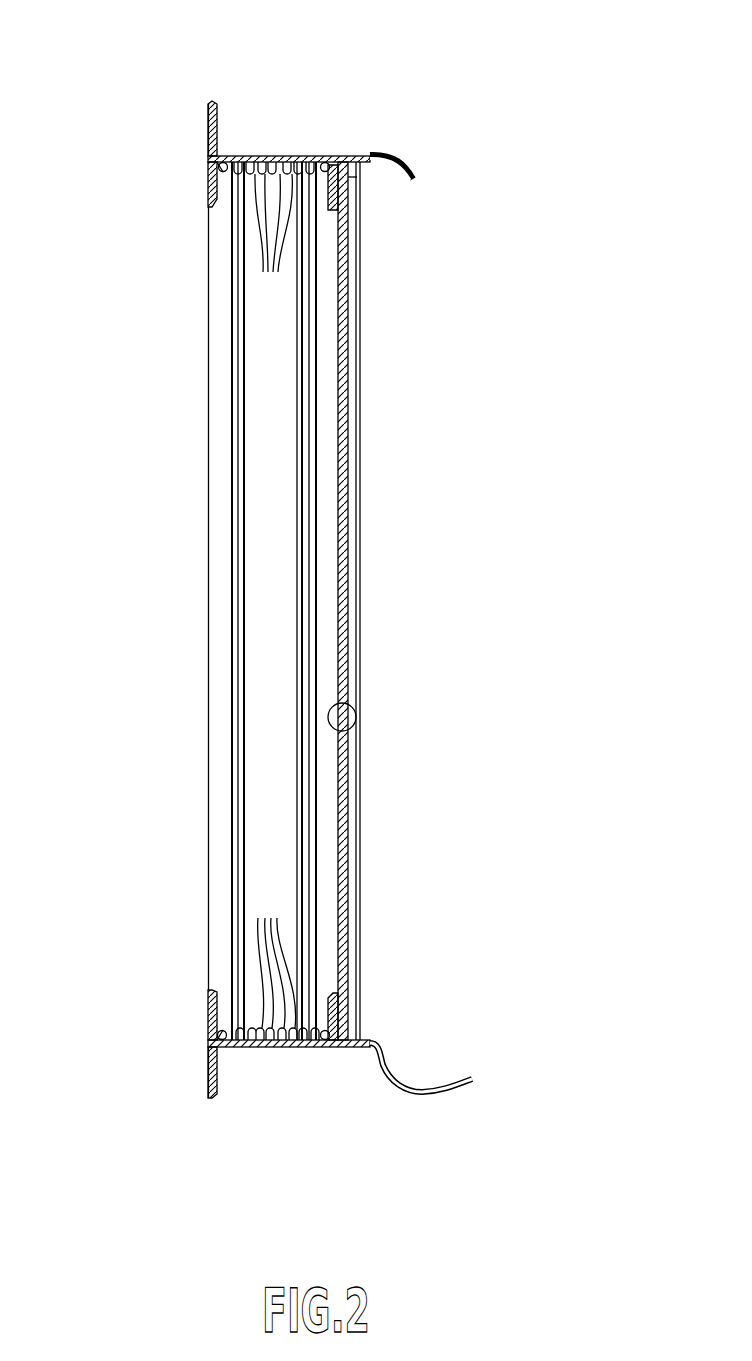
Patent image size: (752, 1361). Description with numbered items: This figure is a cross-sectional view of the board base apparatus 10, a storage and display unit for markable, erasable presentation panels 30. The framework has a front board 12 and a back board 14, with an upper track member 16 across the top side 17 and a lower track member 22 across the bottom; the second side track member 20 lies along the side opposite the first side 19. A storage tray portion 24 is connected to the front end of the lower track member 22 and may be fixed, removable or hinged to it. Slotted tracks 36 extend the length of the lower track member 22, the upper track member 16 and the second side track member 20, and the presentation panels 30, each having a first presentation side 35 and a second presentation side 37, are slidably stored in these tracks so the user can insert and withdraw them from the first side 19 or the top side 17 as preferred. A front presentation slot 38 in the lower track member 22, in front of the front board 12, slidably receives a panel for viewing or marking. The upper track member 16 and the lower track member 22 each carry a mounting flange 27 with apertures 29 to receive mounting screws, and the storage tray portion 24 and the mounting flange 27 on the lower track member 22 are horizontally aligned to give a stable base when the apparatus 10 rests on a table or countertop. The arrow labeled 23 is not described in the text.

The board base apparatus 10 is at (190, 700).
The front board 12 is at (348, 570).
The back board 14 is at (232, 890).
The upper track member 16 is at (285, 156).
The top side 17 is at (341, 131).
The first side 19 is at (266, 578).
The second side track member 20 is at (272, 492).
The lower track member 22 is at (285, 1048).
The opening 23 is at (327, 1052).
The storage tray portion 24 is at (398, 1088).
The mounting flange 27 is at (216, 155).
The apertures 29 is at (208, 130).
The presentation panels 30 is at (298, 395).
The first presentation side 35 is at (360, 660).
The slotted tracks 36 is at (273, 601).
The second presentation side 37 is at (352, 735).
The front presentation slot 38 is at (352, 181).